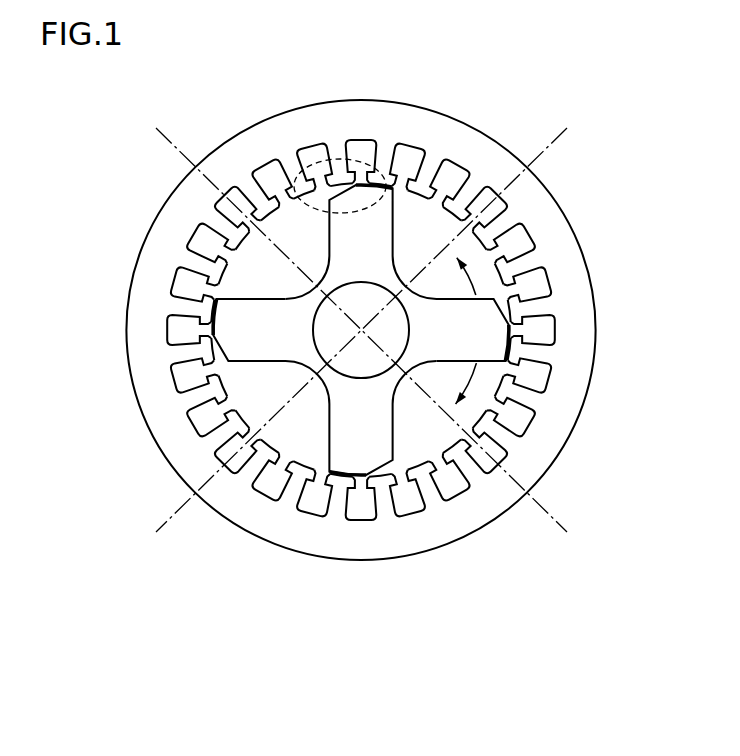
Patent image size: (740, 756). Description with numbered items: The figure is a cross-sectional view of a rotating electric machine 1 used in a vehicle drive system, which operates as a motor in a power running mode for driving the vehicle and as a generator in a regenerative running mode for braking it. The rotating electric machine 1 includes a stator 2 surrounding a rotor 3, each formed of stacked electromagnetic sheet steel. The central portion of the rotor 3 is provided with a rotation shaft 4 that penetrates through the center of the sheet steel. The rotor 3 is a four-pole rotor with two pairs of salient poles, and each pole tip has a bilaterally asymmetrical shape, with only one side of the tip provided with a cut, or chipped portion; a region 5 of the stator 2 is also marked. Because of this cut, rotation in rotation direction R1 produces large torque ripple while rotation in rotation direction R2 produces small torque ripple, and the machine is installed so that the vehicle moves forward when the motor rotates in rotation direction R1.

The rotating electric machine 1 is at (581, 167).
The stator 2 is at (397, 100).
The rotor 3 is at (408, 268).
The rotation shaft 4 is at (337, 313).
The slot / tooth region 5 is at (340, 157).
The rotation direction R1 is at (472, 383).
The rotation direction R2 is at (468, 275).